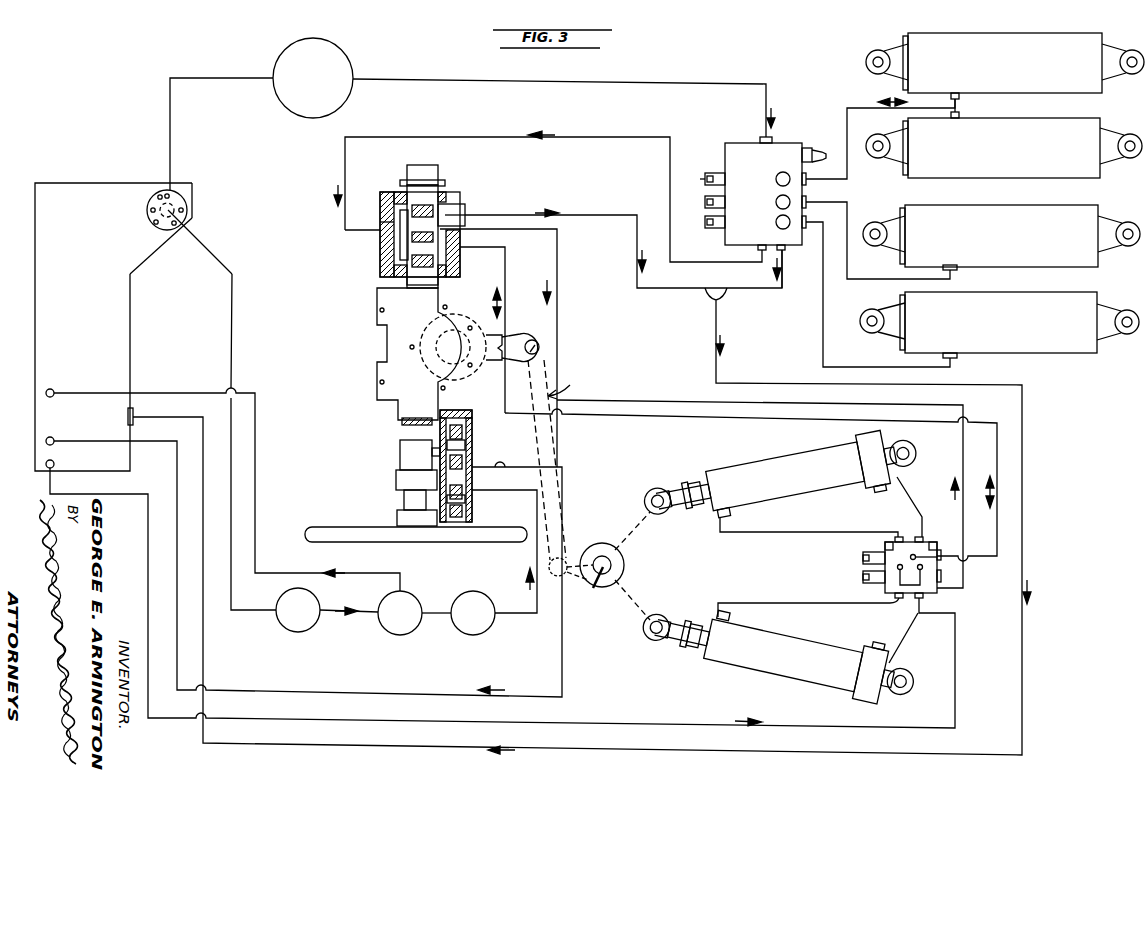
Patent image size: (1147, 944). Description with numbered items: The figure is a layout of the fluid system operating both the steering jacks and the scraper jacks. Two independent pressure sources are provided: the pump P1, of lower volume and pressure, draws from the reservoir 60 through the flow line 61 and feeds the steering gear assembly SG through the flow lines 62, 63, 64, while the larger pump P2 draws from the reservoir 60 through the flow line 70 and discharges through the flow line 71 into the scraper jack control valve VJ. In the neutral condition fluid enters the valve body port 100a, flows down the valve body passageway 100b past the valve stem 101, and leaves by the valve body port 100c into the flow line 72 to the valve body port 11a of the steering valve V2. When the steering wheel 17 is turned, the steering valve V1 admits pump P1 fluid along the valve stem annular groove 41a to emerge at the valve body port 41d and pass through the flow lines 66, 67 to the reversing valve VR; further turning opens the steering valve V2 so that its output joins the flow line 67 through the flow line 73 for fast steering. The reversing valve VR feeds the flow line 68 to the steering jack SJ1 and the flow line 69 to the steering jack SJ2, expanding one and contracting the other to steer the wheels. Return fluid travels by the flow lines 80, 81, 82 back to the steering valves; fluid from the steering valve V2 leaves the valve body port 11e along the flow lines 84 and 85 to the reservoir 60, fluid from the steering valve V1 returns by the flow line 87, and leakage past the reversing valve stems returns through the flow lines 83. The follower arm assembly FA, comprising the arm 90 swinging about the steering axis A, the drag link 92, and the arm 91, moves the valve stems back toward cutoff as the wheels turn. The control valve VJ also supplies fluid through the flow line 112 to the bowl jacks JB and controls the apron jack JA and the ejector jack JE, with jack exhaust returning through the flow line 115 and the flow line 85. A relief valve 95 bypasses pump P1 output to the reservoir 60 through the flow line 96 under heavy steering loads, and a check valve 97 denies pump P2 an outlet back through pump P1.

The flow line 70 is at (170, 143).
The flow line 71 is at (662, 84).
The flow line 72 is at (345, 214).
The flow line 73 is at (557, 315).
The valve body port 11a is at (380, 226).
The valve body port 11e is at (455, 215).
The flow line 84 is at (600, 218).
The flow line 82 is at (482, 330).
The flow line 80 is at (515, 421).
The flow line 81 is at (500, 466).
The flow line 85 is at (180, 417).
The flow line 87 is at (177, 461).
The flow lines 83 is at (133, 494).
The reservoir 60 is at (130, 340).
The flow line 61 is at (231, 322).
The flow line 62 is at (350, 624).
The flow line 63 is at (440, 627).
The flow line 64 is at (510, 490).
The flow line 66 is at (557, 440).
The flow line 67 is at (660, 400).
The flow line 68 is at (905, 497).
The flow line 69 is at (755, 603).
The arm 90 is at (586, 548).
The arm 91 is at (487, 333).
The drag link 92 is at (552, 517).
The relief valve 95 is at (412, 597).
The flow line 96 is at (280, 573).
The check valve 97 is at (483, 592).
The steering wheel 17 is at (370, 542).
The valve stem annular groove 41a is at (472, 445).
The valve body port 41d is at (468, 502).
The valve body port 100a is at (772, 138).
The valve body passageway 100b is at (785, 252).
The valve body port 100c is at (758, 252).
The valve stem 101 is at (705, 179).
The flow line 112 is at (847, 108).
The flow line 115 is at (785, 275).
The pump P1 is at (298, 610).
The pump P2 is at (313, 78).
The steering valve V1 is at (470, 410).
The steering valve V2 is at (380, 258).
The scraper jack control valve VJ is at (765, 194).
The reversing valve VR is at (885, 590).
The steering gear assembly SG is at (377, 347).
The follower arm assembly FA is at (570, 385).
The pivot axis A is at (595, 575).
The bowl jack JB is at (1005, 105).
The apron jack JA is at (1001, 236).
The ejector jack JE is at (999, 322).
The steering jack SJ1 is at (781, 480).
The steering jack SJ2 is at (779, 651).